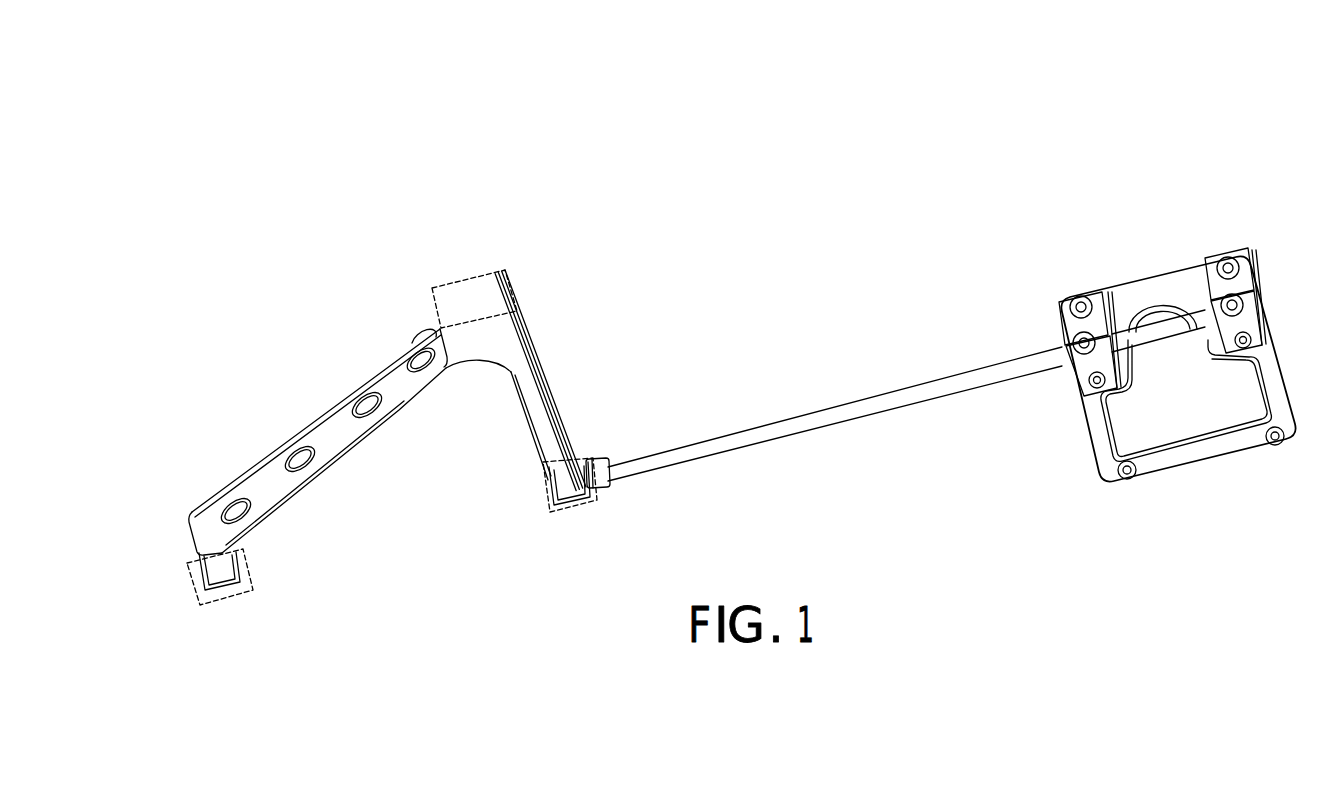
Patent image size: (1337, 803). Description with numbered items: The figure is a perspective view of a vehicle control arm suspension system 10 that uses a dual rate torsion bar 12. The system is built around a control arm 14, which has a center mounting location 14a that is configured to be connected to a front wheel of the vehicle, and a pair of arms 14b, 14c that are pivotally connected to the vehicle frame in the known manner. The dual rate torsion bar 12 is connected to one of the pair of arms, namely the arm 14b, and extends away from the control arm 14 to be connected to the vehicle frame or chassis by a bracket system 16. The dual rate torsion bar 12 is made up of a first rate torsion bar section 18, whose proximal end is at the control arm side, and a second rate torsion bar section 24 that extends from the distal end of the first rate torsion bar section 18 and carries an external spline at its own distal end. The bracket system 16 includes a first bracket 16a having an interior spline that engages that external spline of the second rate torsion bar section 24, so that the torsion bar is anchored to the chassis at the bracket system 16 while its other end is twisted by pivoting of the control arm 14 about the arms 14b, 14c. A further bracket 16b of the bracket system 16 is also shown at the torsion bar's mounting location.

The vehicle control arm suspension system 10 is at (662, 178).
The dual rate torsion bar 12 is at (858, 380).
The control arm 14 is at (323, 400).
The center mounting location 14a is at (473, 295).
The arm 14b is at (578, 501).
The arm 14c is at (250, 567).
The bracket system 16 is at (1258, 250).
The first bracket 16a is at (1266, 311).
The second clamp 16b is at (1060, 330).
The first rate torsion bar section 18 is at (780, 433).
The second rate torsion bar section 24 is at (1172, 330).